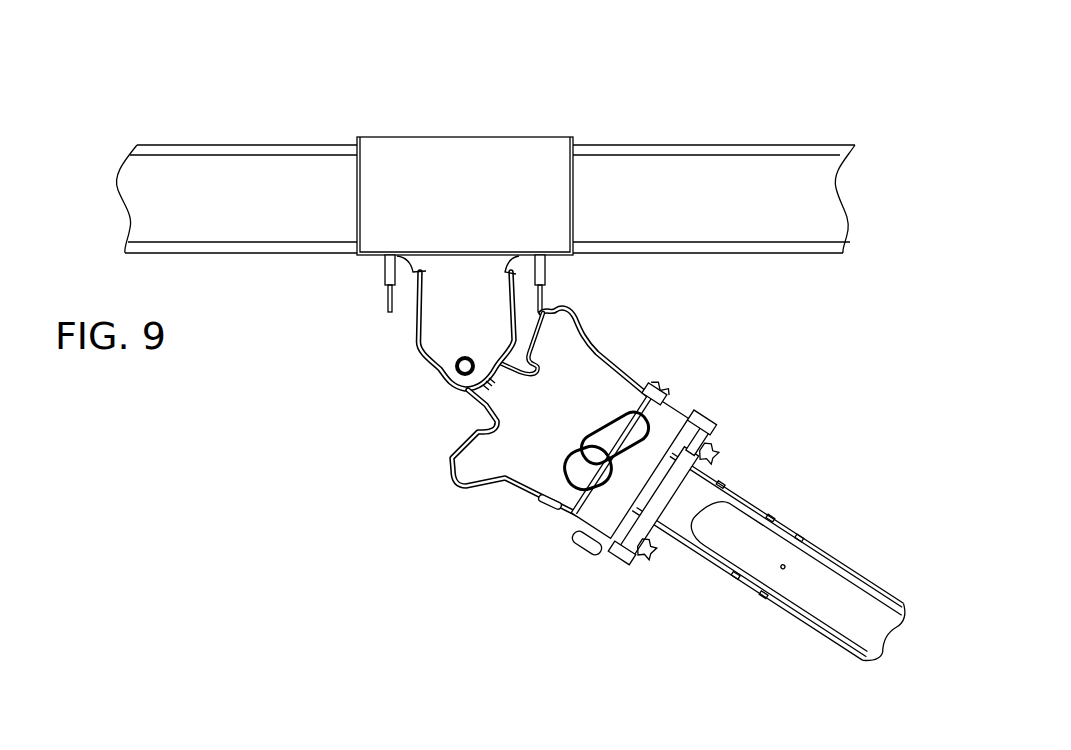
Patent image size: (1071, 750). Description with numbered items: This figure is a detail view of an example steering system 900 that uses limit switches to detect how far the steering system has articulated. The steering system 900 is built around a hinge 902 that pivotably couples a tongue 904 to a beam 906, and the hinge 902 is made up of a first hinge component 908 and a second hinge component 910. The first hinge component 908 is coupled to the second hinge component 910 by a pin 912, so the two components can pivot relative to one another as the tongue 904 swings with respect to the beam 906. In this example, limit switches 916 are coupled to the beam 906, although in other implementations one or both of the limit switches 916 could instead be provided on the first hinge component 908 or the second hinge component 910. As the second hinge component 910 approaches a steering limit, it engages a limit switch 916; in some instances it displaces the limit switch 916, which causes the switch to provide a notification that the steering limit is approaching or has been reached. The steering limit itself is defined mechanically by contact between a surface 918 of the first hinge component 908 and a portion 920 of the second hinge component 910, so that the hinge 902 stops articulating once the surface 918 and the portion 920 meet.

The steering system 900 is at (351, 61).
The hinge 902 is at (411, 531).
The tongue 904 is at (835, 555).
The beam 906 is at (687, 181).
The first hinge component 908 is at (414, 305).
The second hinge component 910 is at (488, 487).
The pin 912 is at (455, 368).
The limit switches 916 is at (388, 300).
The surface 918 is at (527, 282).
The portion 920 is at (557, 306).